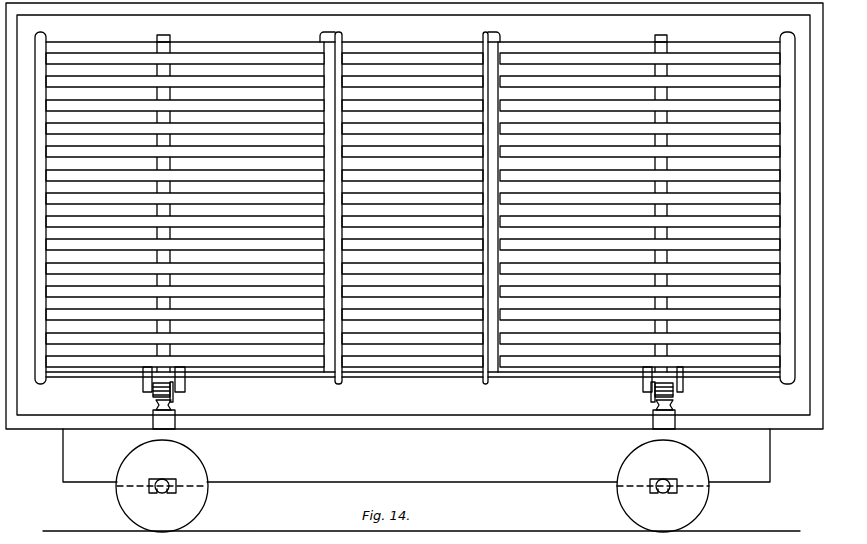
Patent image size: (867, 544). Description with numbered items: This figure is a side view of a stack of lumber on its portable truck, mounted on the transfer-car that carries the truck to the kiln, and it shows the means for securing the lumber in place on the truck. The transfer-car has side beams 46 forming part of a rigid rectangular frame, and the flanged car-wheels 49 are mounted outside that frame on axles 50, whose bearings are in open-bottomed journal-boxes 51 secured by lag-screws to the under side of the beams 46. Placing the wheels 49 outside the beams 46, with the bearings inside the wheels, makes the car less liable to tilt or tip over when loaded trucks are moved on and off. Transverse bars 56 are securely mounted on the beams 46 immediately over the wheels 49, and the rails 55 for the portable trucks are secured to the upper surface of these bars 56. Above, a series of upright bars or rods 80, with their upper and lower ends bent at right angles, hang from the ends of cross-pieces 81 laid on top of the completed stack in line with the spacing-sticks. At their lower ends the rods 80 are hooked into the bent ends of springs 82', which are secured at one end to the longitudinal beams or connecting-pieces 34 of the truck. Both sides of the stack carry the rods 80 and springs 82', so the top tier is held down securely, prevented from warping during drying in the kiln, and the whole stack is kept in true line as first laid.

The upright bars or rods 80 is at (47, 35).
The cross-pieces 81 is at (322, 37).
The springs 82' is at (414, 216).
The longitudinal beams or connecting-pieces 34 is at (185, 381).
The rails 55 is at (155, 405).
The transverse bars 56 is at (172, 417).
The side beams 46 is at (416, 457).
The flanged car-wheels 49 is at (205, 500).
The axles 50 is at (412, 497).
The open-bottomed journal-boxes 51 is at (175, 486).